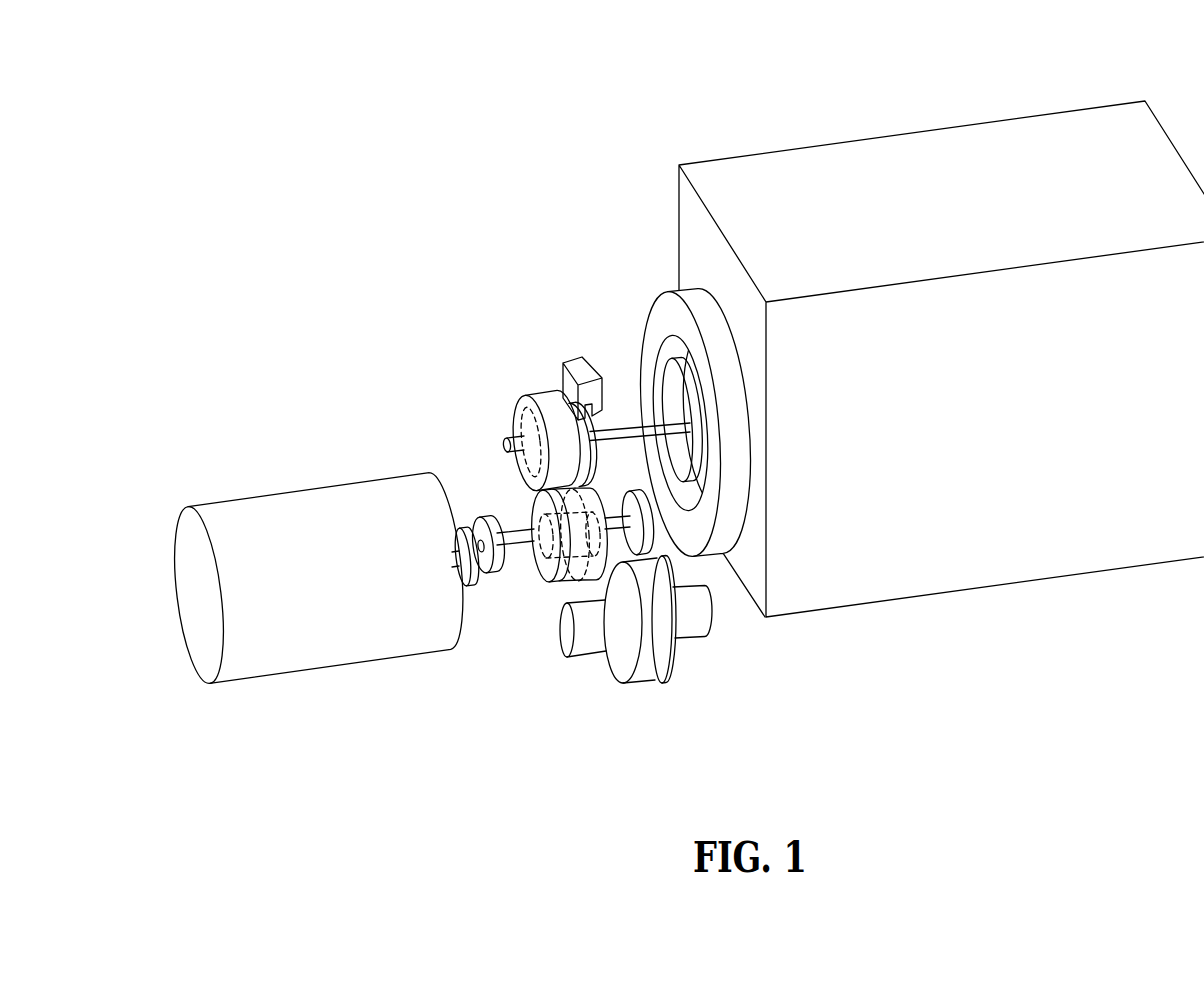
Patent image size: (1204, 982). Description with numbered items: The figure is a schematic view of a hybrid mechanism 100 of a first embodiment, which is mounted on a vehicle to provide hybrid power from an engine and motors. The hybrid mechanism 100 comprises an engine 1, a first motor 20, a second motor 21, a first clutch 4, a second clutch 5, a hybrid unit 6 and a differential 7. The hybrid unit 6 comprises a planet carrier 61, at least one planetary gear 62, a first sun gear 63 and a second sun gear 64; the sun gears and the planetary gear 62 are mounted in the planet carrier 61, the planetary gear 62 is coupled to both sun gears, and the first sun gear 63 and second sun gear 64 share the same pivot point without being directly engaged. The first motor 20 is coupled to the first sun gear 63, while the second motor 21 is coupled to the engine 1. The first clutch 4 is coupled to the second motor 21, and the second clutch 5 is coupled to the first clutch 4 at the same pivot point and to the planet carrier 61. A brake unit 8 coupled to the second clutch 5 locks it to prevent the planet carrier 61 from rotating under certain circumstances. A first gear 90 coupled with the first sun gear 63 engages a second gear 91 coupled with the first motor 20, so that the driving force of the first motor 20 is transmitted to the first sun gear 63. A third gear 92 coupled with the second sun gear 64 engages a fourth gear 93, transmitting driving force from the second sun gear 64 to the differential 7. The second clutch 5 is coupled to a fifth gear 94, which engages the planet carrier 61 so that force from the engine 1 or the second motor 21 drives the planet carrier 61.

The hybrid mechanism 100 is at (145, 73).
The engine 1 is at (922, 578).
The second motor 21 is at (680, 292).
The first clutch 4 is at (683, 364).
The first motor 20 is at (285, 500).
The second gear 91 is at (463, 528).
The first gear 90 is at (482, 517).
The fifth gear 94 is at (529, 394).
The second clutch 5 is at (555, 407).
The brake unit 8 is at (573, 362).
The hybrid unit 6 is at (543, 628).
The planet carrier 61 is at (577, 570).
The planetary gear 62 is at (553, 570).
The first sun gear 63 is at (540, 567).
The second sun gear 64 is at (580, 572).
The third gear 92 is at (648, 540).
The differential 7 is at (640, 665).
The fourth gear 93 is at (669, 672).